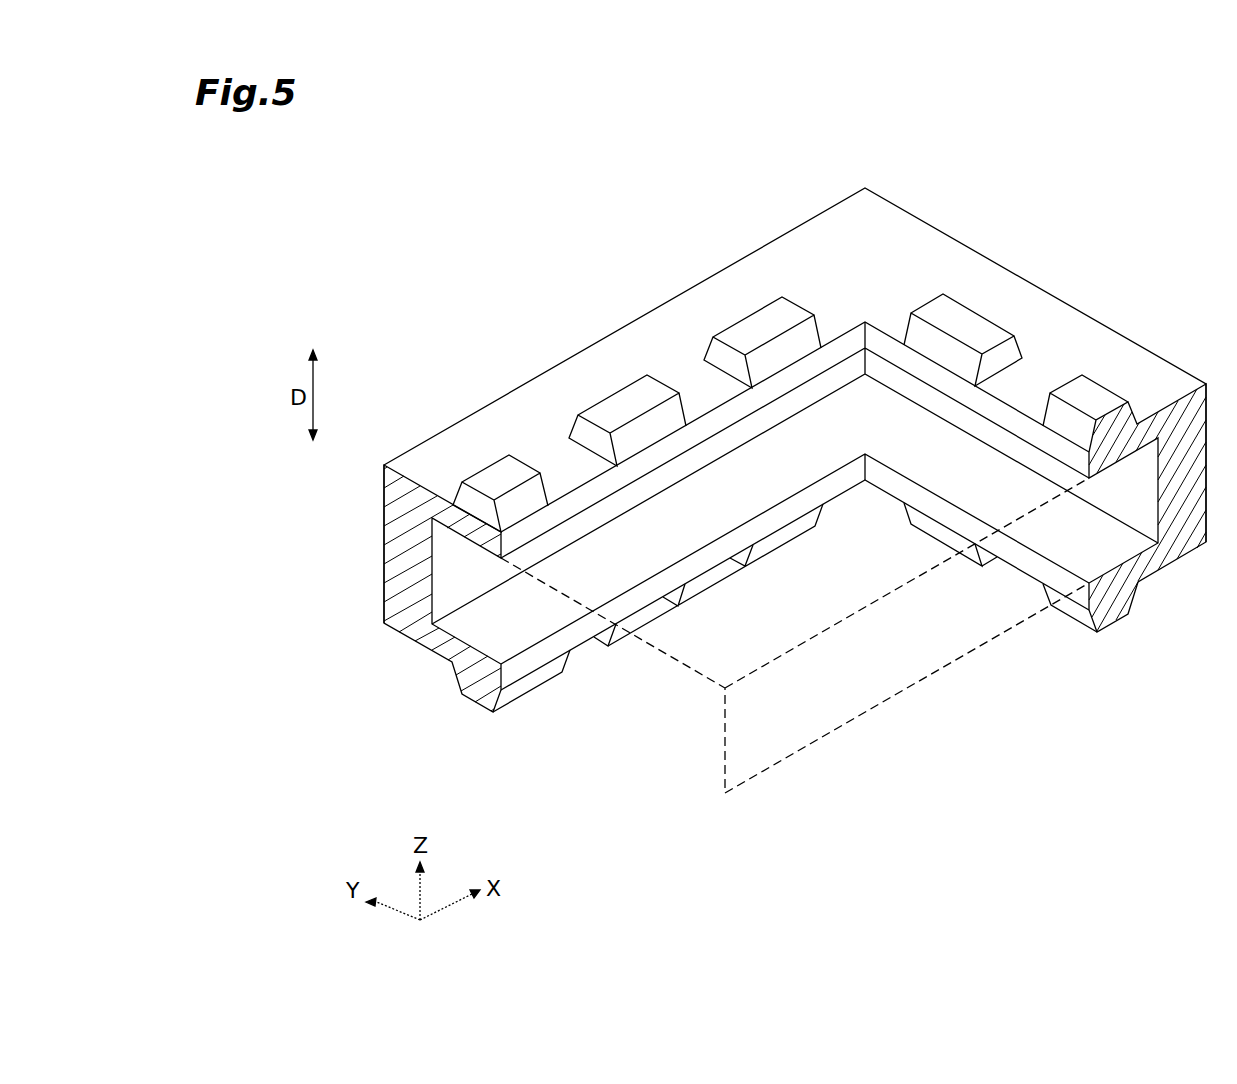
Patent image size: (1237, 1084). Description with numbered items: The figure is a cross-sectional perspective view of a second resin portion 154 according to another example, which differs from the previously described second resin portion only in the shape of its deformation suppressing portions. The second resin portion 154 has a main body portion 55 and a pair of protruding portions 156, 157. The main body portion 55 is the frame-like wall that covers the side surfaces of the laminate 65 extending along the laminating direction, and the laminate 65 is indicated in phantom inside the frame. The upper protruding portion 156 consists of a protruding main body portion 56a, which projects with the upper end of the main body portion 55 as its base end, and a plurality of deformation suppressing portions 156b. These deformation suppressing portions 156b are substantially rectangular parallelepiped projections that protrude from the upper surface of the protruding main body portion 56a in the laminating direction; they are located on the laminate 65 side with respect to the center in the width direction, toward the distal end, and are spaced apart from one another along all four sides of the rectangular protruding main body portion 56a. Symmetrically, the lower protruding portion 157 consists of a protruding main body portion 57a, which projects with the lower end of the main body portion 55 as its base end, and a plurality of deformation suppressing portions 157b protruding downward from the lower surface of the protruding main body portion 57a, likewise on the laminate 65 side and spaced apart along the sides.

The second resin portion 154 is at (1109, 207).
The main body portion 55 is at (384, 548).
The protruding main body portion 56a is at (660, 330).
The protruding portion 156 is at (501, 430).
The deformation suppressing portion 156b is at (618, 412).
The protruding portion 157 is at (438, 663).
The protruding main body portion 57a is at (562, 653).
The deformation suppressing portion 157b is at (625, 640).
The laminate 65 is at (893, 668).